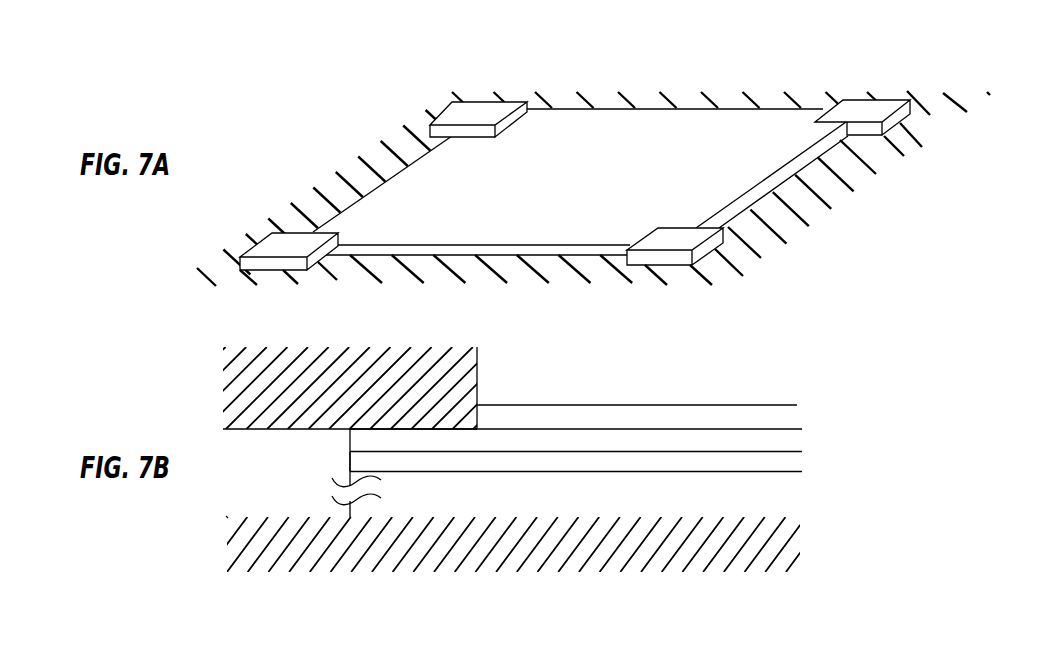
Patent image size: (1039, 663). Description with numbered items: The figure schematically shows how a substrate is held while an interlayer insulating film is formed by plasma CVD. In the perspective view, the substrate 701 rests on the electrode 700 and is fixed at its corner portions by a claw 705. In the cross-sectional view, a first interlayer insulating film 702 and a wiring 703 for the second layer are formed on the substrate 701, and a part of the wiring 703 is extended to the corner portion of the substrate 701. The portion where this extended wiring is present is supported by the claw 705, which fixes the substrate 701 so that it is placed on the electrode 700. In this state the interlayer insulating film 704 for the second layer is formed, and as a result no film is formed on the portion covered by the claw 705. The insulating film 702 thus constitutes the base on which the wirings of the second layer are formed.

In FIG. 7A, the electrode 700 is at (837, 193).
In FIG. 7A, the substrate 701 is at (623, 178).
In FIG. 7B, the substrate 701 is at (793, 503).
In FIG. 7B, the first interlayer insulating film 702 is at (793, 463).
In FIG. 7B, the wiring for the second layer 703 is at (793, 437).
In FIG. 7B, the interlayer insulating film for the second layer 704 is at (793, 412).
In FIG. 7A, the claw 705 is at (467, 117).
In FIG. 7B, the claw 705 is at (457, 380).